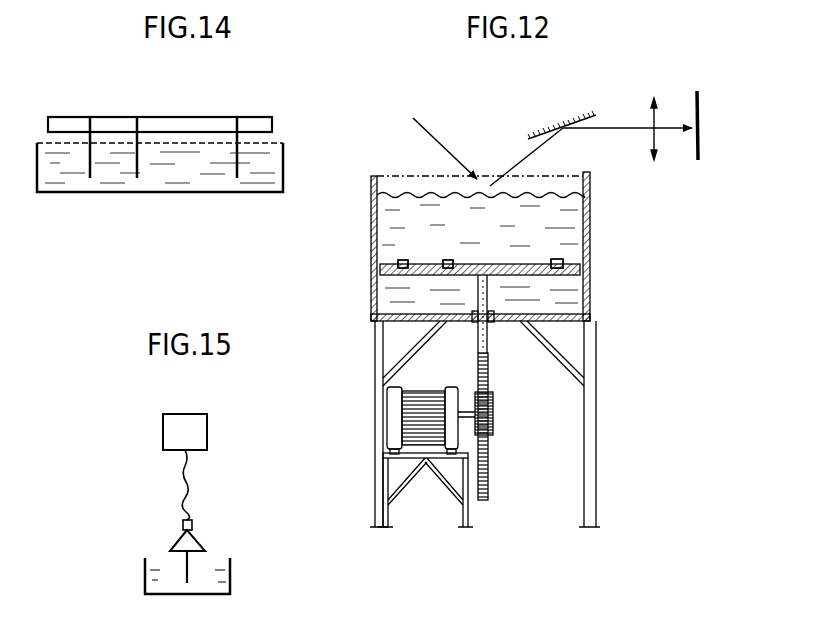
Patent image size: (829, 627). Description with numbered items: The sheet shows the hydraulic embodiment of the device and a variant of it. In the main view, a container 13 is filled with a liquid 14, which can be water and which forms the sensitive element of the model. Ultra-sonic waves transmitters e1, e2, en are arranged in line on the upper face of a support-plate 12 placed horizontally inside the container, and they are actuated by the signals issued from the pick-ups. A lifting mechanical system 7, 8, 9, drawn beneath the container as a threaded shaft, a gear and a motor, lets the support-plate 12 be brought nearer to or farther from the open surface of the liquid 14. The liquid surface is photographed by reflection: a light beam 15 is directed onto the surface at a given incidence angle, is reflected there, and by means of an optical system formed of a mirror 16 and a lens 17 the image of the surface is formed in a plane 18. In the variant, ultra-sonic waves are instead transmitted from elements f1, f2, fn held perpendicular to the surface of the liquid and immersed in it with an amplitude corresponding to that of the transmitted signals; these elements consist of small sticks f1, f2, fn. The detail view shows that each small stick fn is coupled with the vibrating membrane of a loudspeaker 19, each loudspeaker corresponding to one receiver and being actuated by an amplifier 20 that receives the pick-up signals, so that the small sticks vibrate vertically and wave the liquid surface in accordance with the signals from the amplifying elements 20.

In FIG. 12, the lifting mechanical system 7 is at (508, 370).
In FIG. 12, the lifting mechanical system 8 is at (497, 422).
In FIG. 12, the lifting mechanical system 9 is at (423, 430).
In FIG. 12, the support-plate 12 is at (592, 272).
In FIG. 12, the container 13 is at (592, 218).
In FIG. 12, the liquid 14 is at (592, 250).
In FIG. 12, the light beam 15 is at (413, 130).
In FIG. 12, the mirror 16 is at (578, 112).
In FIG. 12, the lens 17 is at (655, 160).
In FIG. 12, the plane 18 is at (745, 106).
In FIG. 15, the loudspeaker 19 is at (177, 535).
In FIG. 15, the amplifier 20 is at (160, 432).
In FIG. 12, the ultra-sonic waves transmitter e1 is at (395, 259).
In FIG. 12, the ultra-sonic waves transmitter e2 is at (447, 258).
In FIG. 12, the ultra-sonic waves transmitter en is at (555, 258).
In FIG. 14, the small stick f1 is at (89, 138).
In FIG. 14, the small stick f2 is at (136, 138).
In FIG. 14, the small stick fn is at (235, 138).
In FIG. 15, the small stick fn is at (183, 568).